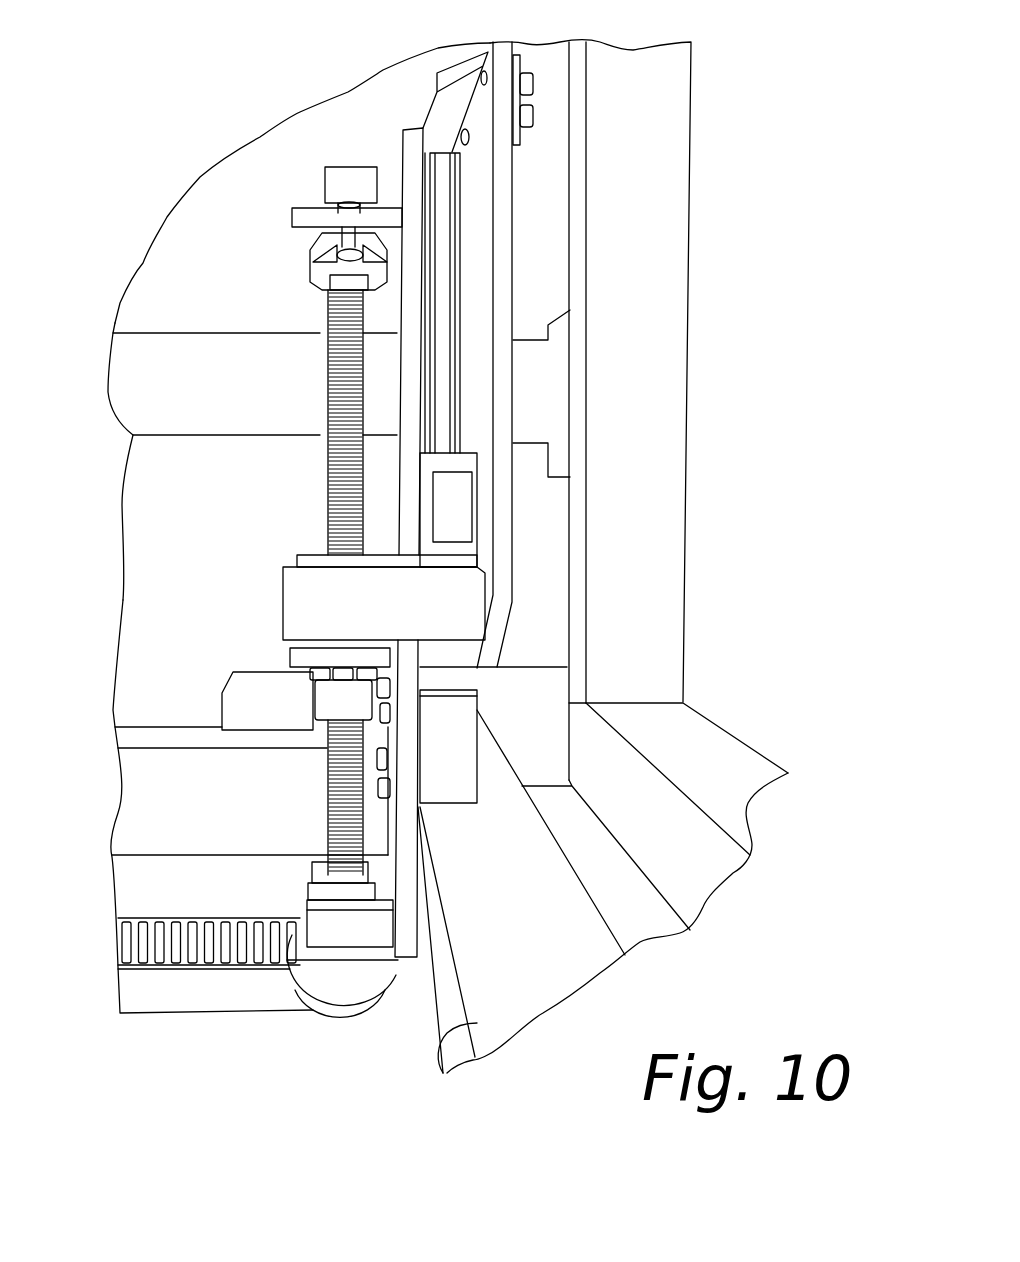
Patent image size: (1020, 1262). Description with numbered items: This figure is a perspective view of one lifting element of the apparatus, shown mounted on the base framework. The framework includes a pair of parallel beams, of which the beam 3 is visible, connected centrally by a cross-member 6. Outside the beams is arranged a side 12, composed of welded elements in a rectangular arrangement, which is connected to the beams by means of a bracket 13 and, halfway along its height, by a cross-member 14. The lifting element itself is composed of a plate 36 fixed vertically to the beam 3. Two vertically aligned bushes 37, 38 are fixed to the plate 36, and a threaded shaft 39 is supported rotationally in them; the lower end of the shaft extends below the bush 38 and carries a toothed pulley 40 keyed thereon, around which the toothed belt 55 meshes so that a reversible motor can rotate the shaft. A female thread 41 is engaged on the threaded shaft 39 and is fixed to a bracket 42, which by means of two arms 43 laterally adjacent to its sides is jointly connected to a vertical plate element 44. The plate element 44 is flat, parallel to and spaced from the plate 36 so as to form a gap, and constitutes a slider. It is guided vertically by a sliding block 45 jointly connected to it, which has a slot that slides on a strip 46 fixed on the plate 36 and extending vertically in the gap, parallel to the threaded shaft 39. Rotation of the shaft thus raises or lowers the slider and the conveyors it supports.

The beam 3 is at (440, 1045).
The cross-member 6 is at (160, 815).
The side 12 is at (692, 162).
The bracket 13 is at (545, 760).
The cross-member 14 is at (162, 371).
The plate 36 is at (413, 140).
The bush 37 is at (313, 270).
The bush 38 is at (317, 895).
The threaded shaft 39 is at (333, 480).
The toothed pulley 40 is at (280, 967).
The female thread 41 is at (320, 703).
The bracket 42 is at (293, 657).
The arms 43 is at (308, 608).
The vertical plate element 44 is at (513, 252).
The sliding block 45 is at (460, 517).
The strip 46 is at (443, 187).
The toothed belt 55 is at (180, 997).